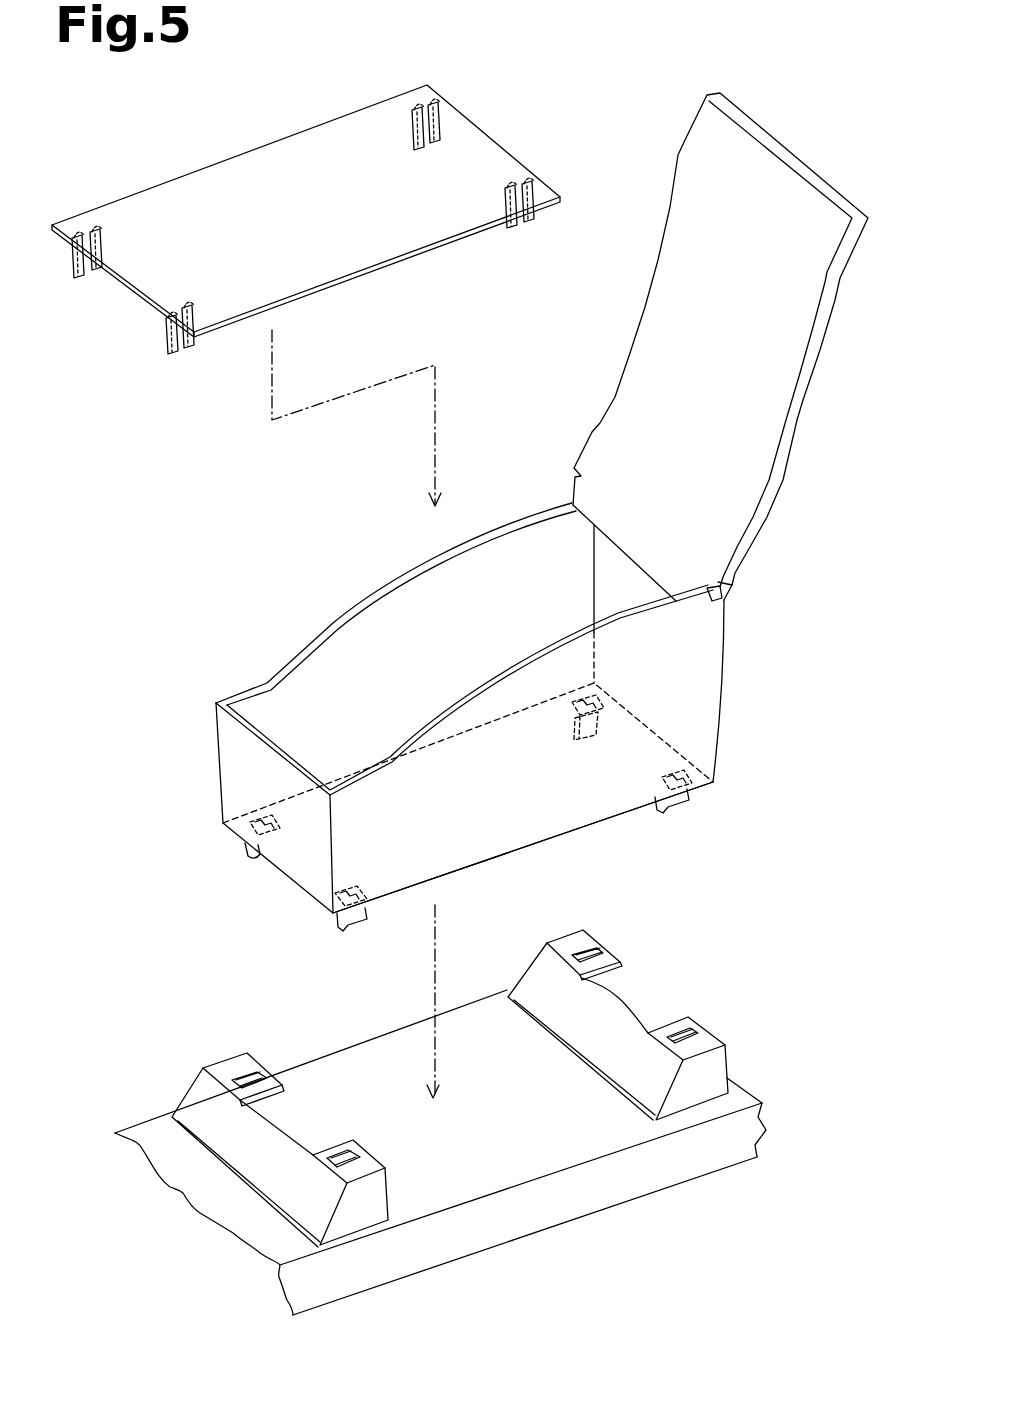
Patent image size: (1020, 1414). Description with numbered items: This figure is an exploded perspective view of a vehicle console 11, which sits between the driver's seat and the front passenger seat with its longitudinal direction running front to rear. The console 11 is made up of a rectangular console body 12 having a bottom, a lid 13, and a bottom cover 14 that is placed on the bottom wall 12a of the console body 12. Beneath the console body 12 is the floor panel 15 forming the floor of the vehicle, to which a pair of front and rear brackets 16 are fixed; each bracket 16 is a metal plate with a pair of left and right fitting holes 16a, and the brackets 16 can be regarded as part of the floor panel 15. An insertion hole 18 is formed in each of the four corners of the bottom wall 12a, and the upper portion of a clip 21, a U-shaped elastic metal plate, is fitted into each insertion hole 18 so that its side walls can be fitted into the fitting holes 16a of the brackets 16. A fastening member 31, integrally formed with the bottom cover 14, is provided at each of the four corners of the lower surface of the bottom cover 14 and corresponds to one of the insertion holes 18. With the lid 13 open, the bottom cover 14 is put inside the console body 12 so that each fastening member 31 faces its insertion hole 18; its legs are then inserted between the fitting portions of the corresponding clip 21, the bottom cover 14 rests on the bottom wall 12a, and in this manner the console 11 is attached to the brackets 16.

The console 11 is at (197, 553).
The console body 12 is at (724, 684).
The bottom wall 12a is at (608, 787).
The lid 13 is at (806, 424).
The bottom cover 14 is at (218, 164).
The floor panel 15 is at (573, 1197).
The bracket 16 is at (190, 1088).
The fitting hole 16a is at (248, 1074).
The insertion hole 18 is at (600, 700).
The clip 21 is at (567, 720).
The fastening member 31 is at (55, 283).